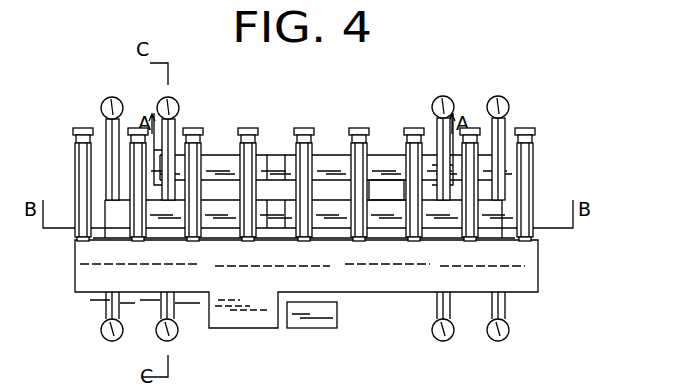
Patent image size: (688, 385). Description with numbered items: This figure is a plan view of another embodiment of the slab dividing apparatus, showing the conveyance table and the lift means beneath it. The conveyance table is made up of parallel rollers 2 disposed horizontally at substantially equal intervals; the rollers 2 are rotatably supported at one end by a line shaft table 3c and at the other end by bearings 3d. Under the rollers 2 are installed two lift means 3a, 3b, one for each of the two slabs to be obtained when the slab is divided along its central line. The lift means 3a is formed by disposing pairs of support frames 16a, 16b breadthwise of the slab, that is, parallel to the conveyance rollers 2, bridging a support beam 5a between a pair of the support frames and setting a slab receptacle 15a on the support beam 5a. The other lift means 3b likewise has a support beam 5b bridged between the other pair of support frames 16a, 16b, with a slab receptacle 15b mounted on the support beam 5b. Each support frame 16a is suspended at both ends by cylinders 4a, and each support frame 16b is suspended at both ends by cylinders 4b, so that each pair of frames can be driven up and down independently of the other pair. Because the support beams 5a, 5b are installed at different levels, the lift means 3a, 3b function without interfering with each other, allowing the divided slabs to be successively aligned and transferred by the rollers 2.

The parallel rollers 2 is at (533, 178).
The lift means 3a is at (281, 228).
The lift means 3b is at (276, 162).
The line shaft table 3c is at (353, 283).
The bearings 3d is at (308, 130).
The cylinders 4a is at (108, 98).
The cylinders 4b is at (174, 98).
The support beam 5a is at (330, 216).
The support beam 5b is at (378, 162).
The slab receptacle 15a is at (167, 218).
The slab receptacle 15b is at (158, 130).
The support frames 16a is at (106, 130).
The support frames 16b is at (179, 132).